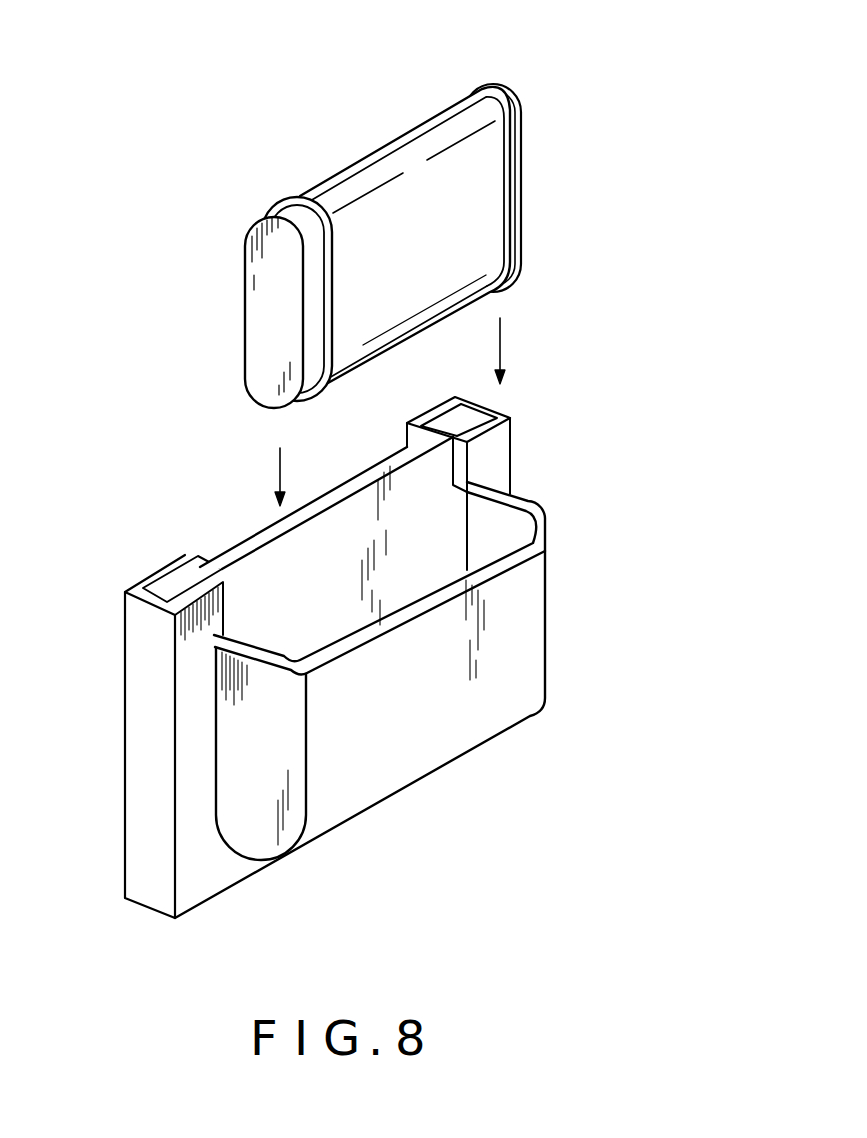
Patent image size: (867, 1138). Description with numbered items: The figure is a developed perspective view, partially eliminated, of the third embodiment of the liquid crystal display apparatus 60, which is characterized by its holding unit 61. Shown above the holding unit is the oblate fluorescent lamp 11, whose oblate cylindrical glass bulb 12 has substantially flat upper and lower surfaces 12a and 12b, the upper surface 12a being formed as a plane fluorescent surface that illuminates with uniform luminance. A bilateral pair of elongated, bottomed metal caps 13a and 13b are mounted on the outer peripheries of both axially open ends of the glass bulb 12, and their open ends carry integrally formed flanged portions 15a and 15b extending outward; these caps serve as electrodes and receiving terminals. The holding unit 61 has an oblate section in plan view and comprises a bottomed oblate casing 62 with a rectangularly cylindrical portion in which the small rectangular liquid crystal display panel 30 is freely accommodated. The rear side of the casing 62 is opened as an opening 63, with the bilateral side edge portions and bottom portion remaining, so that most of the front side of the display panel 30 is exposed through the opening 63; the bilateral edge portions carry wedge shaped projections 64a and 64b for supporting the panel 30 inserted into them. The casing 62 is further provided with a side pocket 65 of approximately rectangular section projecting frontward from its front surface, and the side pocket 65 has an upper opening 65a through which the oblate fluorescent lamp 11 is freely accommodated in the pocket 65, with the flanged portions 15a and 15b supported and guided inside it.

The oblate fluorescent lamp 11 is at (402, 221).
The glass bulb 12 is at (392, 225).
The upper surface 12a is at (322, 187).
The lower surface 12b is at (446, 195).
The metal cap 13a is at (268, 316).
The metal cap 13b is at (524, 185).
The flanged portion 15a is at (287, 199).
The flanged portion 15b is at (520, 100).
The liquid crystal display panel 30 is at (362, 477).
The liquid crystal display apparatus 60 is at (345, 646).
The holding unit 61 is at (144, 692).
The casing 62 is at (232, 876).
The opening 63 is at (181, 534).
The wedge shaped projection 64a is at (188, 562).
The wedge shaped projection 64b is at (428, 420).
The side pocket 65 is at (418, 700).
The upper opening 65a is at (433, 557).